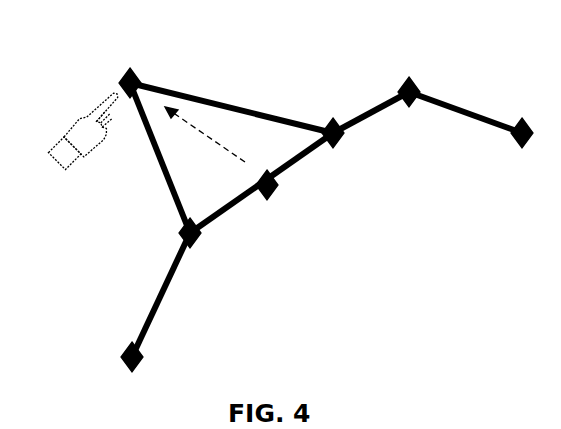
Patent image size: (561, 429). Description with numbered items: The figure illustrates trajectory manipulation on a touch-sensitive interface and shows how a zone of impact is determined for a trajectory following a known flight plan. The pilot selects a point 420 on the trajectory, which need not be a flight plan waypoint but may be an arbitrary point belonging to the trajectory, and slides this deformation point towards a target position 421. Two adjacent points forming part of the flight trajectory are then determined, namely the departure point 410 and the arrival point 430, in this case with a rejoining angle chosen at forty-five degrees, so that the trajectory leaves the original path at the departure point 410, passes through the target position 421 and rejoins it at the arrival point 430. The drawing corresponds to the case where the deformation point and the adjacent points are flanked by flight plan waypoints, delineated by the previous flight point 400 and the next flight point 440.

The previous flight point 400 is at (120, 357).
The departure point 410 is at (180, 233).
The deformation point 420 is at (275, 193).
The target position 421 is at (128, 70).
The arrival point 430 is at (333, 118).
The next flight point 440 is at (417, 78).